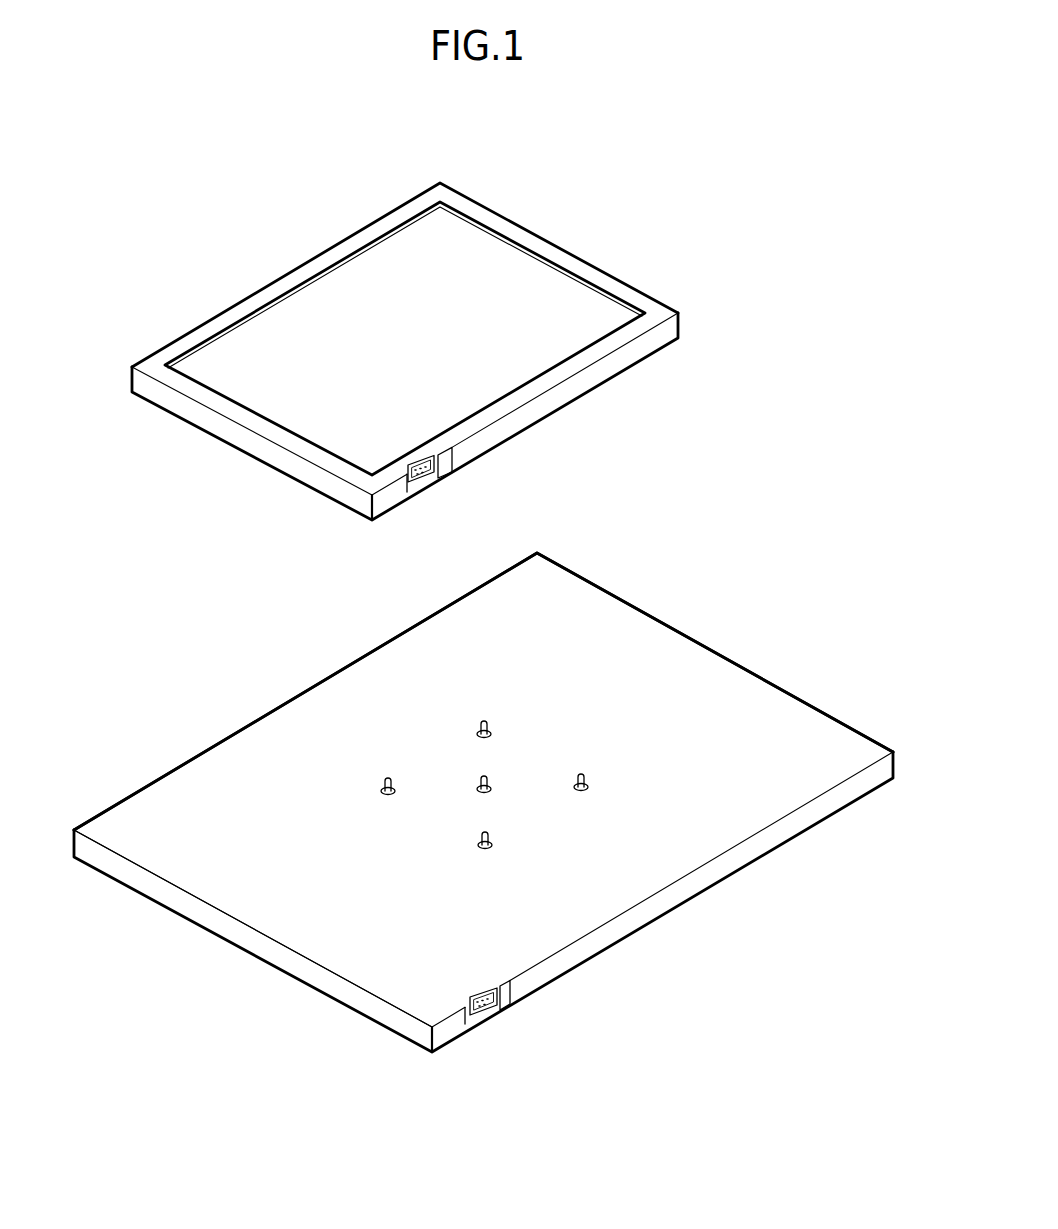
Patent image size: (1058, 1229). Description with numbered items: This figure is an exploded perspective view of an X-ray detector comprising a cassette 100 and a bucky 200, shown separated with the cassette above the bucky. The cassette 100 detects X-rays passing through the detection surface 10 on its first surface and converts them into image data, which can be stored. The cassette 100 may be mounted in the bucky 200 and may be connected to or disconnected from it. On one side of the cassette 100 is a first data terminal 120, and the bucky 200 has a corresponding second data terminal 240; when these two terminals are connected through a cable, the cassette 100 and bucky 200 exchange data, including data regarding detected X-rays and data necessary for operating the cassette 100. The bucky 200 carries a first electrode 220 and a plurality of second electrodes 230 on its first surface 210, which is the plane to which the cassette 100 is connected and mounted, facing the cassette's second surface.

The detection surface 10 is at (300, 304).
The cassette 100 is at (640, 291).
The first data terminal 120 is at (432, 480).
The bucky 200 is at (825, 711).
The first surface 210 is at (718, 666).
The first electrode 220 is at (484, 776).
The second electrodes 230 is at (483, 721).
The second data terminal 240 is at (492, 1010).